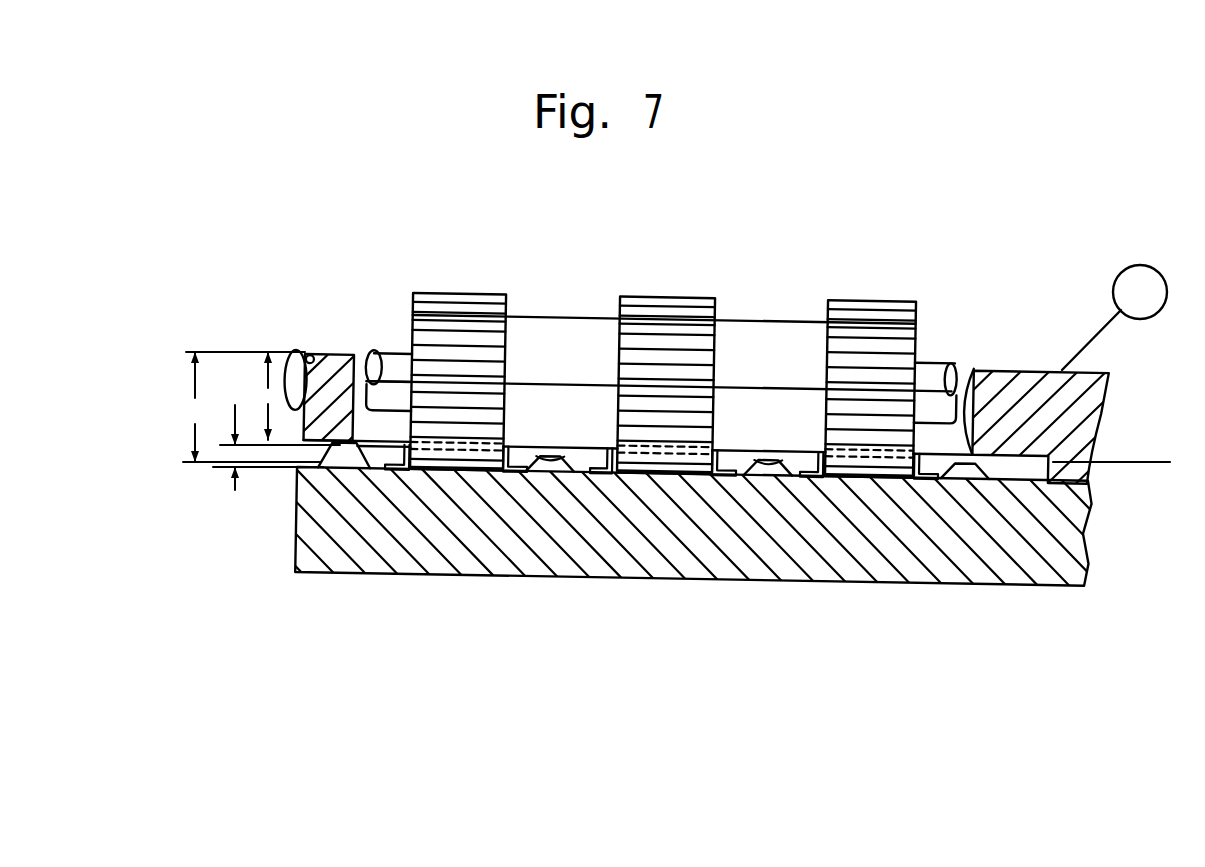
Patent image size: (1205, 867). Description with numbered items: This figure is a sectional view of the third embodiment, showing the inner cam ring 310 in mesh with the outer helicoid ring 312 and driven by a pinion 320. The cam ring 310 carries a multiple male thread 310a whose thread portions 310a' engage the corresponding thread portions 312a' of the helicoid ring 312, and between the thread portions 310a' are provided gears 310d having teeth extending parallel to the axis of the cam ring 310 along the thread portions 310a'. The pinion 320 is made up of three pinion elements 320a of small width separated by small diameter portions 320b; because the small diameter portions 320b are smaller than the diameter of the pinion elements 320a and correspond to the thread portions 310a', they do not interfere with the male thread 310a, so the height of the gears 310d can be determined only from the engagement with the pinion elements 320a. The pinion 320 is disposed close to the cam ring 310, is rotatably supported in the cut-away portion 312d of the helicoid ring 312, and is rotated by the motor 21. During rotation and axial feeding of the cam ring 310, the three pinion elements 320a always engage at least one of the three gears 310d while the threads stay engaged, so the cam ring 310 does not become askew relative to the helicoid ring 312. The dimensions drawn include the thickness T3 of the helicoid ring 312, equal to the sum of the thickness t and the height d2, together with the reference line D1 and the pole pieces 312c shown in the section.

The cam ring 310 is at (1062, 560).
The multiple male thread 310a is at (657, 540).
The thread portions 310a' is at (662, 544).
The gears 310d is at (432, 475).
The helicoid ring 312 is at (1087, 417).
The thread portions 312a' is at (659, 431).
The pole piece of stator core 312c is at (487, 472).
The cut-away portion 312d is at (967, 368).
The pinion 320 is at (957, 338).
The pinion elements 320a is at (453, 308).
The small diameter portions 320b is at (562, 322).
The motor 21 is at (1119, 276).
The reference plane D1 is at (1129, 468).
The thickness of the helicoid ring T3 is at (251, 407).
The thickness t is at (280, 398).
The height d2 is at (234, 492).